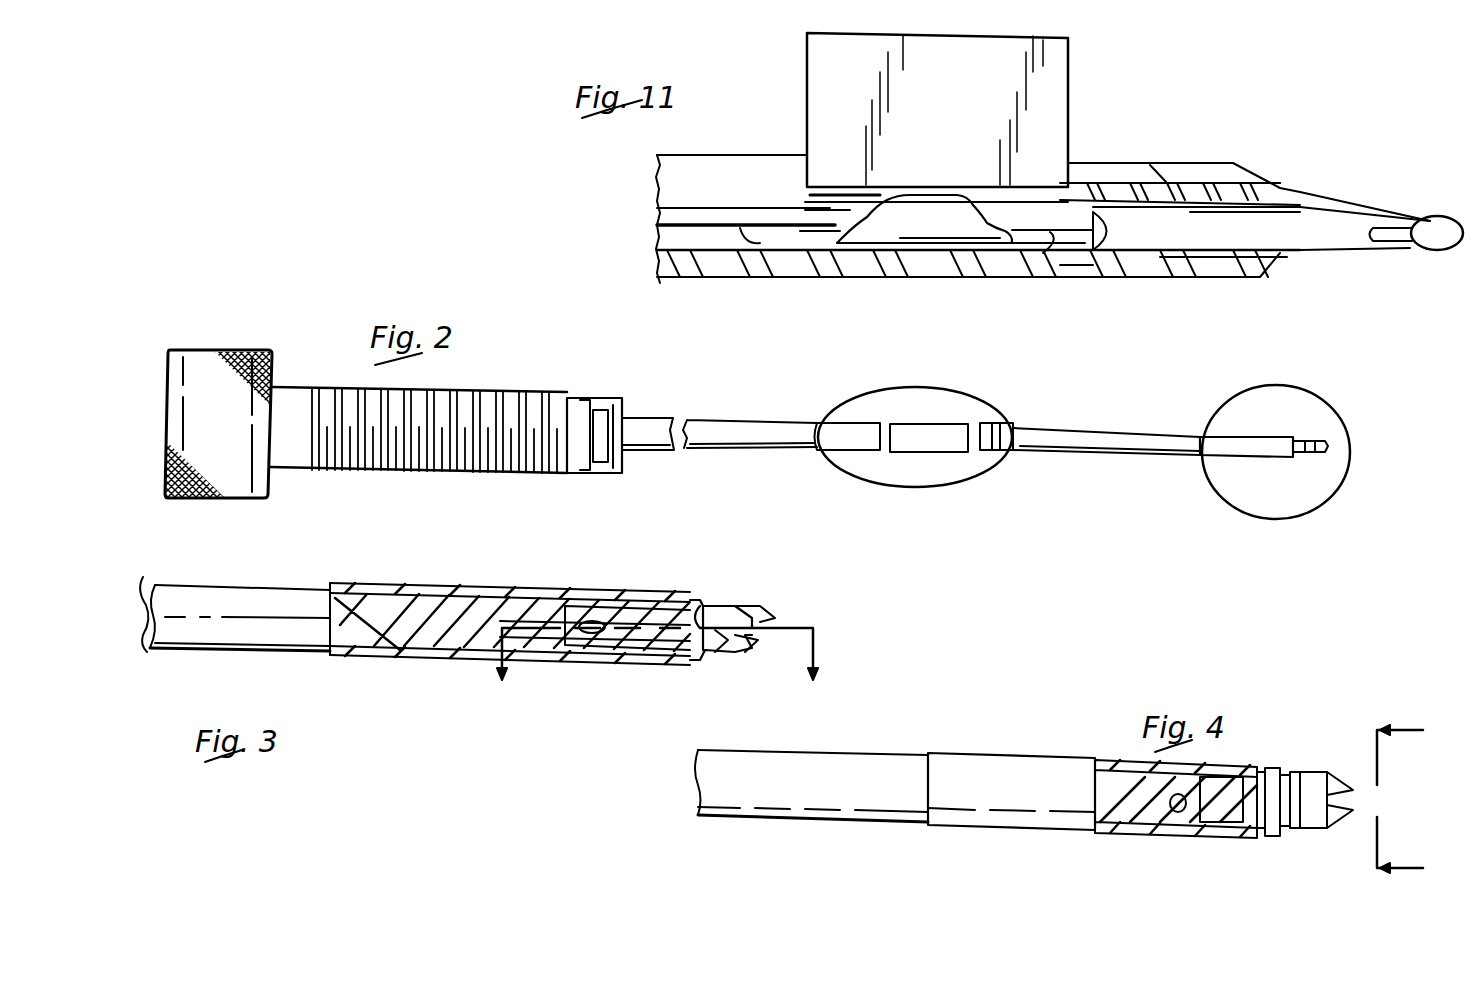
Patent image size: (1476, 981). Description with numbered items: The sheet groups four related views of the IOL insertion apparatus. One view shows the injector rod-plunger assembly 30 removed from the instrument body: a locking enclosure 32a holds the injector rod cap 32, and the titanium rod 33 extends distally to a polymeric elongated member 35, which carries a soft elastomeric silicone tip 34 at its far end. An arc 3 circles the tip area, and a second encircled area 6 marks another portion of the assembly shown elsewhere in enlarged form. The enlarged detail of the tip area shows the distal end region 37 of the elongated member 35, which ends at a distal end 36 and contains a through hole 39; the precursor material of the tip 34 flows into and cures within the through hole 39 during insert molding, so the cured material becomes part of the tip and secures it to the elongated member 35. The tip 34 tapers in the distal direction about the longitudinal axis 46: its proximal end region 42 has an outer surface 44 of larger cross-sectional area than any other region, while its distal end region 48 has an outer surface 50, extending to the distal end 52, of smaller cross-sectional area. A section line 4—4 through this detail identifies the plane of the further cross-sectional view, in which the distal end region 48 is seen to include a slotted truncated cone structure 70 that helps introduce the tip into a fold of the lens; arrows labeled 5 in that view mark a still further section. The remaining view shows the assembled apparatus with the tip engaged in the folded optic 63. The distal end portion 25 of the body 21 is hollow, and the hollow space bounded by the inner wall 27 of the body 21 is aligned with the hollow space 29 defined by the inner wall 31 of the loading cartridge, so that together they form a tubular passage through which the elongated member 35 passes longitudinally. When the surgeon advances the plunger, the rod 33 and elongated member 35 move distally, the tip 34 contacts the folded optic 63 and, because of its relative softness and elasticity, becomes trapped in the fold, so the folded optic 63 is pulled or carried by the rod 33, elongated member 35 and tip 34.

In FIG. 11, the body 21 is at (1163, 150).
In FIG. 11, the distal end portion 25 is at (1232, 161).
In FIG. 11, the inner wall 27 is at (1195, 265).
In FIG. 11, the hollow space 29 is at (1140, 232).
In FIG. 11, the inner wall 31 is at (1050, 240).
In FIG. 11, the folded optic 63 is at (886, 226).
In FIG. 11, the tip 34 is at (825, 226).
In FIG. 2, the tip 34 is at (1307, 460).
In FIG. 3, the tip 34 is at (578, 660).
In FIG. 4, the tip 34 is at (1020, 765).
In FIG. 11, the elongated member 35 is at (713, 215).
In FIG. 2, the elongated member 35 is at (1050, 462).
In FIG. 3, the elongated member 35 is at (272, 605).
In FIG. 4, the elongated member 35 is at (860, 805).
In FIG. 2, the injector rod-plunger assembly 30 is at (533, 478).
In FIG. 2, the injector rod cap 32 is at (588, 468).
In FIG. 2, the locking enclosure 32a is at (586, 412).
In FIG. 2, the rod 33 is at (773, 420).
In FIG. 2, the detail region of FIG. 6 is at (835, 408).
In FIG. 2, the arc 3 is at (1215, 420).
In FIG. 3, the longitudinal axis 46 is at (152, 602).
In FIG. 3, the proximal end region 42 is at (420, 590).
In FIG. 3, the outer surface 44 is at (438, 660).
In FIG. 3, the distal end region 37 is at (565, 605).
In FIG. 3, the through hole 39 is at (605, 655).
In FIG. 4, the through hole 39 is at (1183, 830).
In FIG. 3, the distal end 36 is at (700, 620).
In FIG. 3, the distal end 52 is at (762, 618).
In FIG. 3, the outer surface 50 is at (737, 650).
In FIG. 3, the distal end region 48 is at (722, 655).
In FIG. 3, the line 4— 4 is at (652, 667).
In FIG. 4, the slotted truncated cone structure 70 is at (1340, 832).
In FIG. 4, the section line 5- 5 is at (1412, 805).